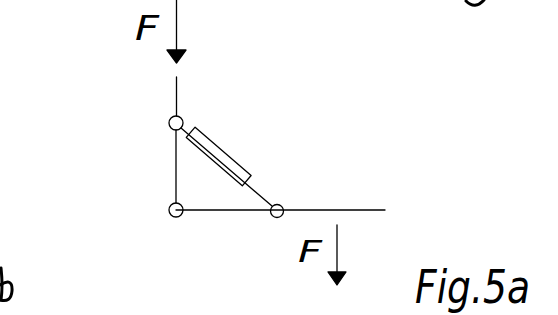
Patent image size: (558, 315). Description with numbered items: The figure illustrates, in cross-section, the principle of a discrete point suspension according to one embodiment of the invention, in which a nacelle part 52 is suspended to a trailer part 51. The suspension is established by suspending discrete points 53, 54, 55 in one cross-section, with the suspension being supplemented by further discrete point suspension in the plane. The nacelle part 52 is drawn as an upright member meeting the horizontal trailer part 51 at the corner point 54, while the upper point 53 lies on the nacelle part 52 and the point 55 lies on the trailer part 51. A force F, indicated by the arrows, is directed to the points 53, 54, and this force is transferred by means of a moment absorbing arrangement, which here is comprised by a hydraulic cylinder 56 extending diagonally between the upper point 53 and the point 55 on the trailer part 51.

The trailer part 51 is at (333, 210).
The nacelle part 52 is at (176, 168).
The discrete point 53 is at (168, 121).
The discrete point 54 is at (168, 210).
The discrete point 55 is at (271, 217).
The hydraulic cylinder 56 is at (225, 155).